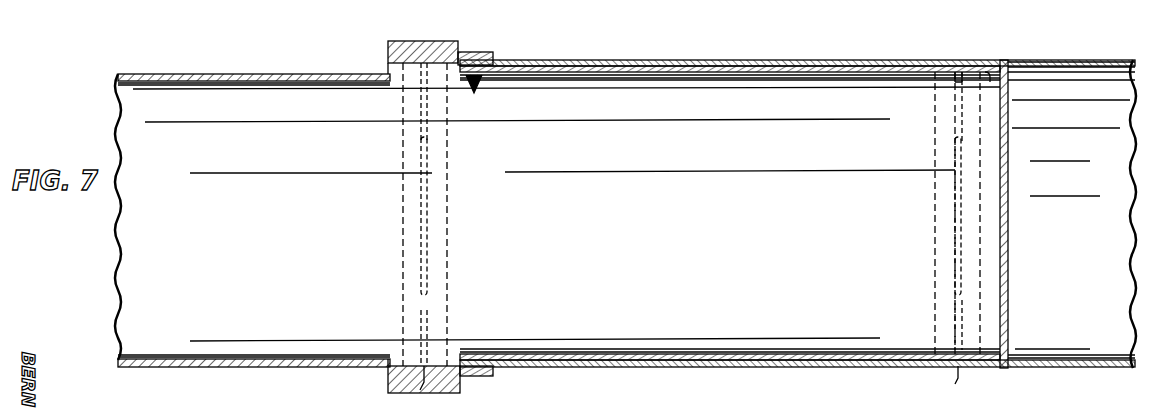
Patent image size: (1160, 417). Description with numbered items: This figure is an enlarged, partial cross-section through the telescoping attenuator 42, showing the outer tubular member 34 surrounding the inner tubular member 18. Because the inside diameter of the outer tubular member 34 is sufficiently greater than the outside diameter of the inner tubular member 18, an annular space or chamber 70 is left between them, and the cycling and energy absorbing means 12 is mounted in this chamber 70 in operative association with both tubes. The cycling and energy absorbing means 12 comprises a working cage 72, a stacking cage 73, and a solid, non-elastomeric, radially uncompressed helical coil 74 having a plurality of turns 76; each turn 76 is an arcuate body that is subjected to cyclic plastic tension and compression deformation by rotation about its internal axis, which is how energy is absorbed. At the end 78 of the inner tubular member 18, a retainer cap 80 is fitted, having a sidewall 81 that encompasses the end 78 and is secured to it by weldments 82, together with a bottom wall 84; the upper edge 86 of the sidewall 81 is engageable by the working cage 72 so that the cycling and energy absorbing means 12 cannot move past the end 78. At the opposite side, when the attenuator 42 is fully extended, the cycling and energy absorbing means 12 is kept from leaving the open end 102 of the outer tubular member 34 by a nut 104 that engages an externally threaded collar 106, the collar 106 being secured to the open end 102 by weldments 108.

The cycling and energy absorbing means 12 is at (663, 49).
The inner tubular member 18 is at (212, 371).
The outer tubular member 34 is at (1057, 375).
The attenuator 42 is at (796, 33).
The annular space or chamber 70 is at (558, 60).
The working cage 72 is at (938, 60).
The stacking cage 73 is at (450, 180).
The helical coil 74 is at (859, 51).
The turns 76 is at (723, 66).
The end of the inner tubular member 78 is at (973, 70).
The retainer cap 80 is at (1008, 183).
The sidewall 81 is at (1018, 58).
The weldments 82 is at (1074, 214).
The bottom wall 84 is at (1008, 236).
The upper edge 86 is at (988, 61).
The open end 102 is at (398, 60).
The nut 104 is at (418, 45).
The externally threaded collar 106 is at (468, 52).
The weldments 108 is at (483, 93).